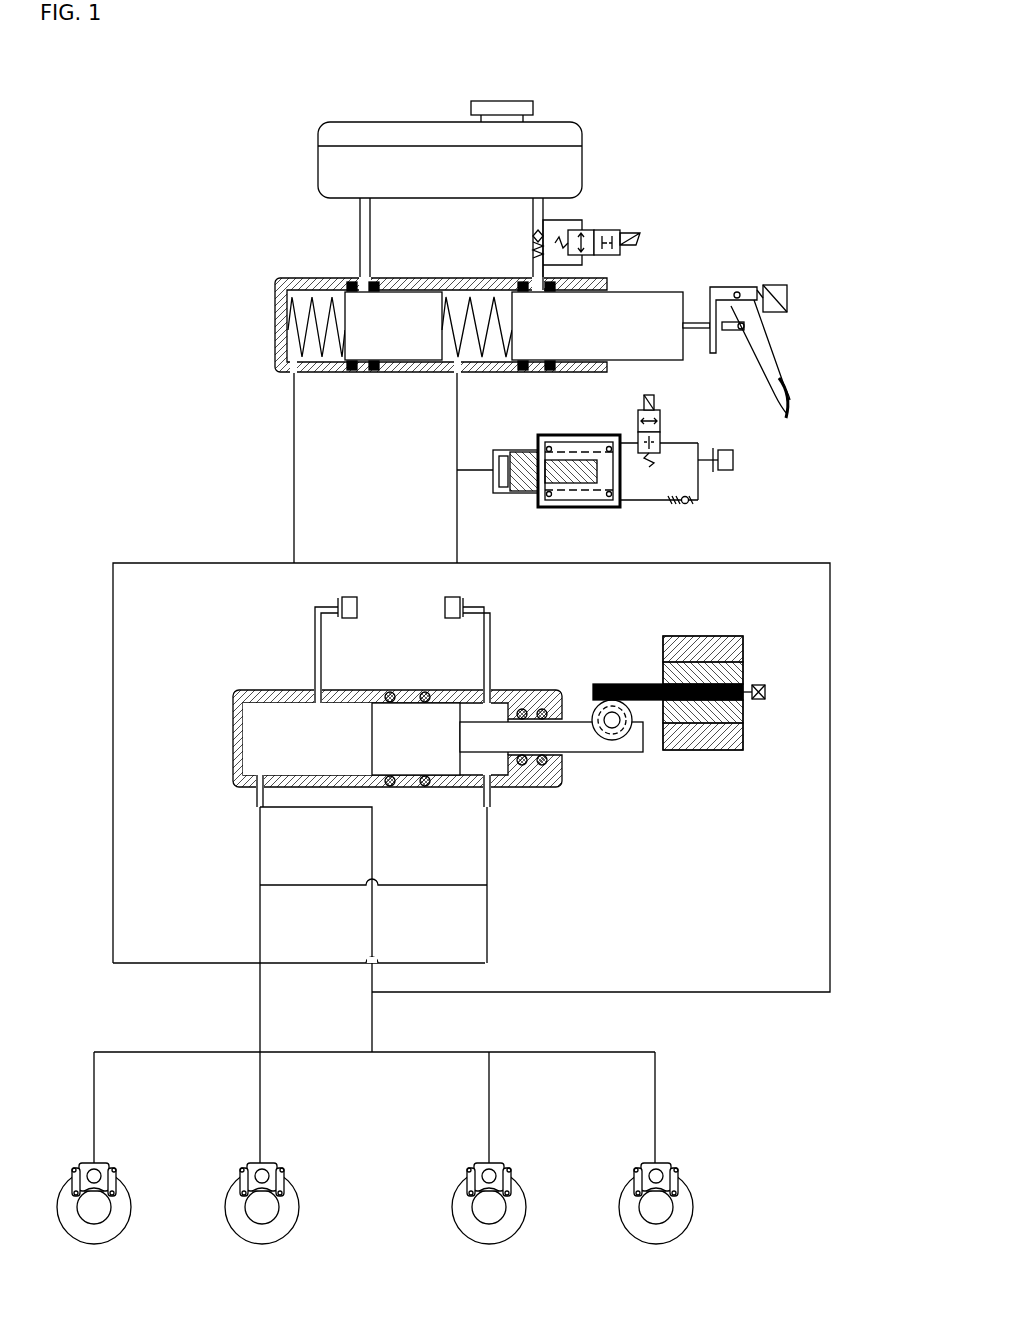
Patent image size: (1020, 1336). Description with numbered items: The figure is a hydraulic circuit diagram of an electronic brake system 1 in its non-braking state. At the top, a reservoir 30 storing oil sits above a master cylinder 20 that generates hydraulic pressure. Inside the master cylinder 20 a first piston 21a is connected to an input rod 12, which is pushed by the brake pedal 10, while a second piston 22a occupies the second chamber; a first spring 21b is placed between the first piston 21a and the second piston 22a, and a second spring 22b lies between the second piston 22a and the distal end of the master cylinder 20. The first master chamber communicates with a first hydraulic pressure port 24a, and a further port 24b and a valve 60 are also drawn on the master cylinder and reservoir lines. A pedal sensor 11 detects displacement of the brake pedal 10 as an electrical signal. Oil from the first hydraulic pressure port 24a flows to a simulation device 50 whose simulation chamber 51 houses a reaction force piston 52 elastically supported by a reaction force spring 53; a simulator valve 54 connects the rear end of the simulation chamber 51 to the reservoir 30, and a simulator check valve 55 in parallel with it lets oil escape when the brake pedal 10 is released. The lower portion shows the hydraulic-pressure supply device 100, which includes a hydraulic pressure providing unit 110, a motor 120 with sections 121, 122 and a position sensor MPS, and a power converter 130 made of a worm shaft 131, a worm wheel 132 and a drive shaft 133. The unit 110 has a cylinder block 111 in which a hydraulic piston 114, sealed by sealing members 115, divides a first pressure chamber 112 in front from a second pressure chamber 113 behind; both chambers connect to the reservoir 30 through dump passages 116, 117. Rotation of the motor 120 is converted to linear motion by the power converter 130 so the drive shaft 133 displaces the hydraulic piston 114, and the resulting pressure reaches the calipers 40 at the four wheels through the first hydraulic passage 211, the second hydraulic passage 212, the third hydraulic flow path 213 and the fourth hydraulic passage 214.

The electronic brake system 1 is at (300, 69).
The brake pedal 10 is at (760, 345).
The pedal sensor 11 is at (783, 290).
The input rod 12 is at (696, 322).
The master cylinder 20 is at (275, 302).
The first piston 21a is at (648, 298).
The first spring 21b is at (478, 345).
The second piston 22a is at (417, 300).
The second spring 22b is at (300, 326).
The first hydraulic pressure port 24a is at (455, 374).
The second hydraulic port 24b is at (292, 374).
The reservoir 30 is at (360, 122).
The caliper 40 is at (116, 1180).
The simulation device 50 is at (541, 443).
The simulation chamber 51 is at (580, 440).
The reaction force piston 52 is at (521, 450).
The reaction force spring 53 is at (553, 445).
The simulator valve 54 is at (660, 415).
The simulator check valve 55 is at (684, 506).
The cut valve 60 is at (612, 230).
The hydraulic-pressure supply device 100 is at (225, 638).
The hydraulic pressure providing unit 110 is at (381, 710).
The cylinder block 111 is at (243, 726).
The first pressure chamber 112 is at (262, 736).
The second pressure chamber 113 is at (496, 760).
The hydraulic piston 114 is at (442, 708).
The sealing members 115 is at (390, 692).
The first dump passage 116 is at (315, 665).
The second dump passage 117 is at (491, 668).
The motor 120 is at (731, 678).
The stator 121 is at (743, 741).
The rotor 122 is at (743, 716).
The motor position sensor MPS is at (760, 685).
The power converter 130 is at (601, 704).
The worm shaft 131 is at (618, 684).
The worm wheel 132 is at (632, 730).
The drive shaft 133 is at (625, 753).
The first hydraulic passage 211 is at (257, 798).
The second hydraulic passage 212 is at (373, 850).
The third hydraulic flow path 213 is at (260, 882).
The fourth hydraulic passage 214 is at (488, 850).